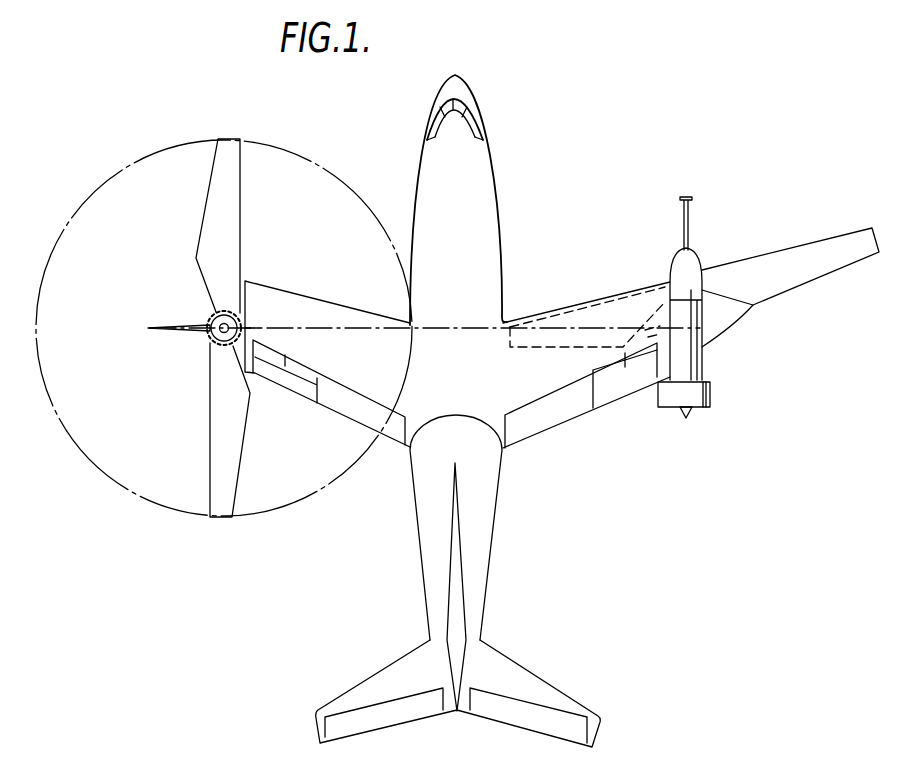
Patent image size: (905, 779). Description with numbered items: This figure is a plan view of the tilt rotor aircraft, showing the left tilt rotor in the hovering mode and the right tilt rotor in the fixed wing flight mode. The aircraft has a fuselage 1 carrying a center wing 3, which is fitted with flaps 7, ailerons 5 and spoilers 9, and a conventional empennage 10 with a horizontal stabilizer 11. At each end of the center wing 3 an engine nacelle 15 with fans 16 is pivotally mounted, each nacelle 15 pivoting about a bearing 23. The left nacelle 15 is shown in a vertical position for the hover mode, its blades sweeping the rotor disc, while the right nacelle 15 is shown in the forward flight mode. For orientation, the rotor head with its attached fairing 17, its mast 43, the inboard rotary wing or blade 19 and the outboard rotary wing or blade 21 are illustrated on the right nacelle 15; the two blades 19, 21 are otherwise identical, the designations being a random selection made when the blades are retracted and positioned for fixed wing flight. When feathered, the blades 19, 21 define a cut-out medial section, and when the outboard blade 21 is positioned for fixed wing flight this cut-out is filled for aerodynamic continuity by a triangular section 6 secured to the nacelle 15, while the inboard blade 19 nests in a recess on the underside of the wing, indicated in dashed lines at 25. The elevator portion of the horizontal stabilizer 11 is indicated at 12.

The fuselage 1 is at (494, 164).
The center wing 3 is at (328, 308).
The ailerons 5 is at (623, 381).
The triangular section 6 is at (730, 321).
The flaps 7 is at (570, 410).
The spoilers 9 is at (314, 368).
The empennage 10 is at (425, 640).
The horizontal stabilizer 11 is at (549, 685).
The elevator 12 is at (540, 729).
The engine nacelle 15 is at (705, 370).
The fans 16 is at (712, 403).
The fairing 17 is at (700, 262).
The inboard rotary wing or blade 19 is at (197, 232).
The outboard rotary wing or blade 21 is at (776, 254).
The bearing 23 is at (258, 324).
The wing root folded position 25 is at (547, 327).
The mast 43 is at (682, 212).